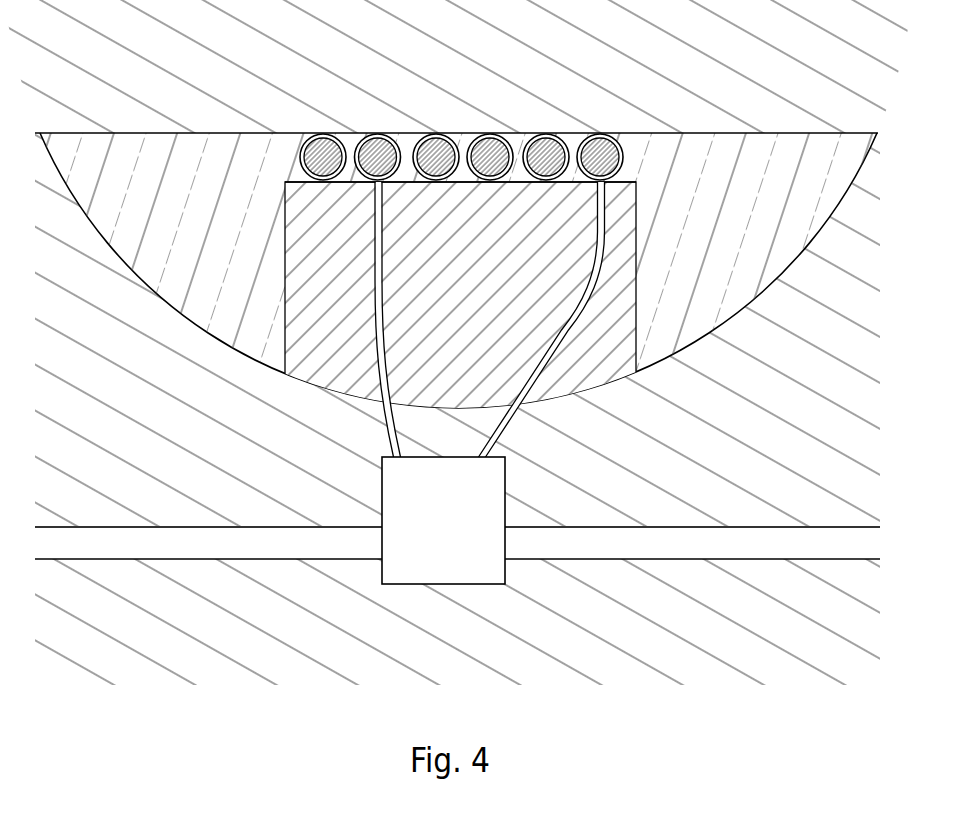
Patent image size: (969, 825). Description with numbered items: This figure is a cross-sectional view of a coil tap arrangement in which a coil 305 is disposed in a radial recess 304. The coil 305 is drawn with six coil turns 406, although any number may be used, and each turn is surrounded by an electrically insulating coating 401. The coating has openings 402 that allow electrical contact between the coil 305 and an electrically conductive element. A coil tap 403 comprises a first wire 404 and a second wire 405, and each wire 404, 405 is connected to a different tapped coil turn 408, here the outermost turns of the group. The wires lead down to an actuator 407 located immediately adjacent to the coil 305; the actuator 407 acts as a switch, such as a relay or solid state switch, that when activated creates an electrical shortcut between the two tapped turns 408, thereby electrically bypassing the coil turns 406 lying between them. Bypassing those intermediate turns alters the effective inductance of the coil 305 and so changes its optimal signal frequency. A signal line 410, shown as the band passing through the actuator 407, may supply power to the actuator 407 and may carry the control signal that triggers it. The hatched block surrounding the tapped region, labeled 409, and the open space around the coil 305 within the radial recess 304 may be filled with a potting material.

The radial recess 304 is at (703, 352).
The coil 305 is at (647, 156).
The electrically insulating coating 401 is at (380, 128).
The opening 402 is at (386, 187).
The coil tap 403 is at (451, 302).
The first wire 404 is at (362, 215).
The second wire 405 is at (612, 189).
The coil turns 406 is at (485, 130).
The actuator 407 is at (511, 503).
The tapped coil turn 408 is at (313, 130).
The filler material 409 is at (532, 297).
The signal line 410 is at (278, 559).